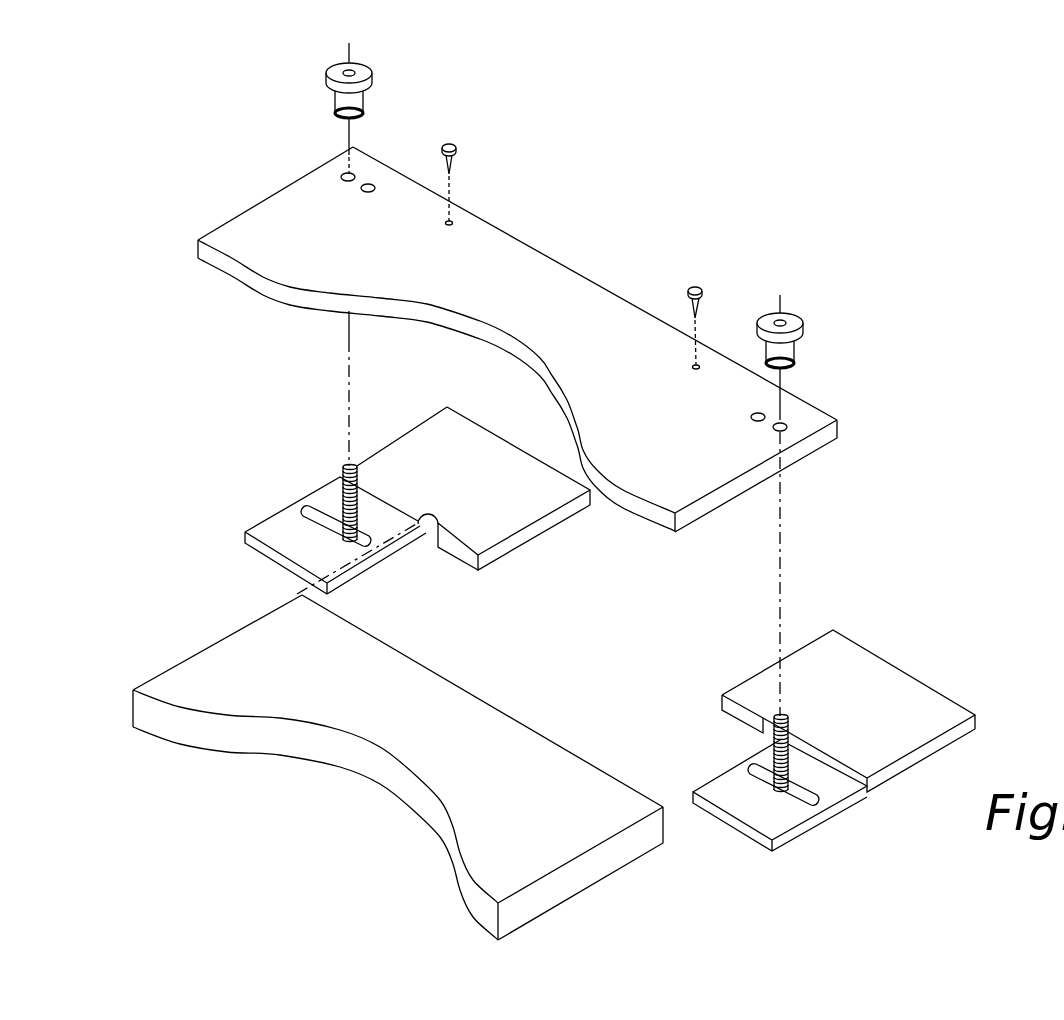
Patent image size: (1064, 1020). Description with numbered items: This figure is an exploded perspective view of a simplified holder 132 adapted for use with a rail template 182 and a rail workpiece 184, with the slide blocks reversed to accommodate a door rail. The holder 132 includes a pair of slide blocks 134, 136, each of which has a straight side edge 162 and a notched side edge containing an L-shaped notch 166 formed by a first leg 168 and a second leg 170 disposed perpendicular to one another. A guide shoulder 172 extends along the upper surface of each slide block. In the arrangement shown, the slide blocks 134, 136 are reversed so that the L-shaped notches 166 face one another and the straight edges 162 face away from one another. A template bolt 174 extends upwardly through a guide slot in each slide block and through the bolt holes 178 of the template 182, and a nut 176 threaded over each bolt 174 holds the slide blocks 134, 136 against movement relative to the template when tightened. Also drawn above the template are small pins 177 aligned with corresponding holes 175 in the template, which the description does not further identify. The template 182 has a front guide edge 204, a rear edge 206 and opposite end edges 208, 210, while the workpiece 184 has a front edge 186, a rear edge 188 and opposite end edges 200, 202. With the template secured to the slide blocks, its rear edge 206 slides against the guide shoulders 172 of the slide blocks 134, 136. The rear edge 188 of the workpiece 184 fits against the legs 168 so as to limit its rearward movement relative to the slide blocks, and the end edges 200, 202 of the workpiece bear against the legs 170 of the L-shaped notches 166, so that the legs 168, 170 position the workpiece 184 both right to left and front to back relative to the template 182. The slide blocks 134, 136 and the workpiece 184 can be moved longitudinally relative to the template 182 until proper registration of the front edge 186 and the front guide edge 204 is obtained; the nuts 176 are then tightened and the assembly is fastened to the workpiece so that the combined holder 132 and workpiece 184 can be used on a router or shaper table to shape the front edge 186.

The holder 132 is at (148, 402).
The slide block 134 is at (947, 740).
The slide block 136 is at (391, 444).
The straight side edge 162 is at (262, 520).
The L-shaped notch 166 is at (367, 565).
The first leg 168 is at (460, 553).
The second leg 170 is at (340, 581).
The guide shoulder 172 is at (389, 508).
The template bolt 174 is at (343, 487).
The pin hole 175 is at (447, 221).
The nut 176 is at (372, 74).
The locating pin 177 is at (453, 144).
The bolt holes 178 is at (352, 173).
The rail template 182 is at (494, 221).
The rail workpiece 184 is at (167, 670).
The front edge 186 is at (387, 768).
The rear edge 188 is at (482, 703).
The end edge 200 is at (203, 647).
The end edge 202 is at (595, 870).
The front guide edge 204 is at (487, 338).
The rear edge 206 is at (598, 283).
The end edge 208 is at (250, 209).
The end edge 210 is at (798, 452).